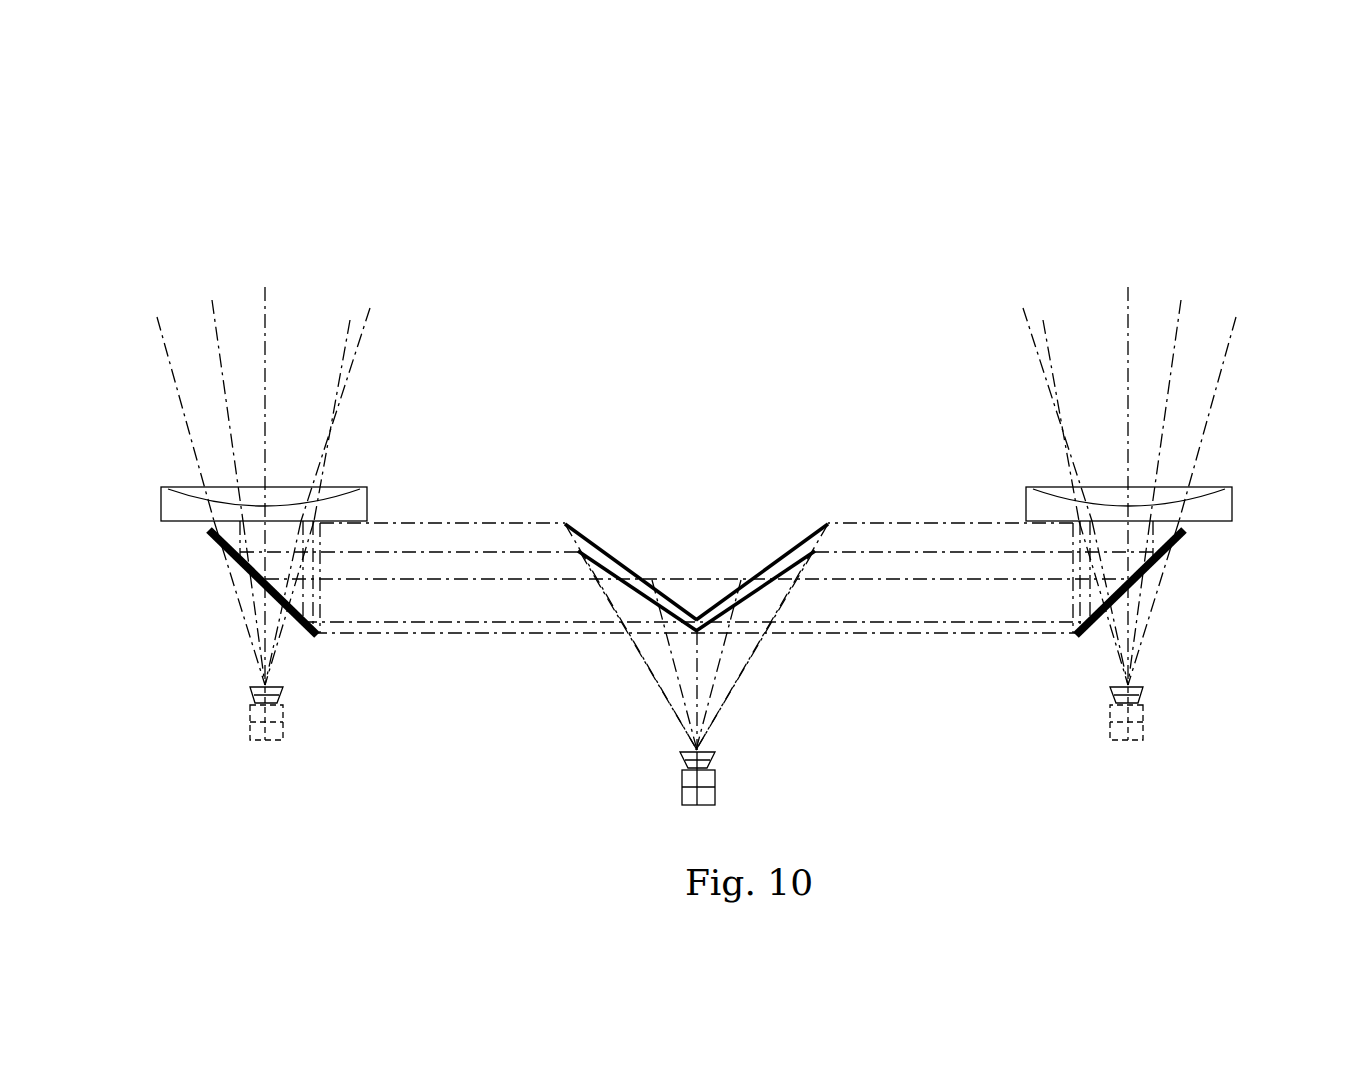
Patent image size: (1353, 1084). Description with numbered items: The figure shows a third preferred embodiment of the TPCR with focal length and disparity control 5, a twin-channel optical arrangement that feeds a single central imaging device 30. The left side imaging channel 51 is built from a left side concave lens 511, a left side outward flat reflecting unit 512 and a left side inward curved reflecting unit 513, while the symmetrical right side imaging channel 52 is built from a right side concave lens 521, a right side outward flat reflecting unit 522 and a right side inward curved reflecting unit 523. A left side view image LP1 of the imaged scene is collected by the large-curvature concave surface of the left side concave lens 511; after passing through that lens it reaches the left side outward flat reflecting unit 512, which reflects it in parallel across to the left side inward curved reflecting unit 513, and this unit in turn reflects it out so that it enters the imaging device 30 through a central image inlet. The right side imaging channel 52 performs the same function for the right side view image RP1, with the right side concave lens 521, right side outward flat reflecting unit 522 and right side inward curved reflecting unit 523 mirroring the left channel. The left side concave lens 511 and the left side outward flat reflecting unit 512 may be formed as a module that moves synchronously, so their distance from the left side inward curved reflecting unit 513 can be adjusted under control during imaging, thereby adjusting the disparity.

The TPCR with focal length and disparity control 5 is at (708, 498).
The imaging device 30 is at (705, 795).
The left side imaging channel 51 is at (413, 570).
The left side concave lens 511 is at (178, 500).
The left side outward flat reflecting unit 512 is at (297, 628).
The left side inward curved reflecting unit 513 is at (635, 562).
The right side imaging channel 52 is at (923, 568).
The right side concave lens 521 is at (1197, 507).
The right side outward flat reflecting unit 522 is at (1097, 620).
The right side inward curved reflecting unit 523 is at (755, 560).
The left side view image LP1 is at (265, 370).
The right side view image RP1 is at (1125, 340).